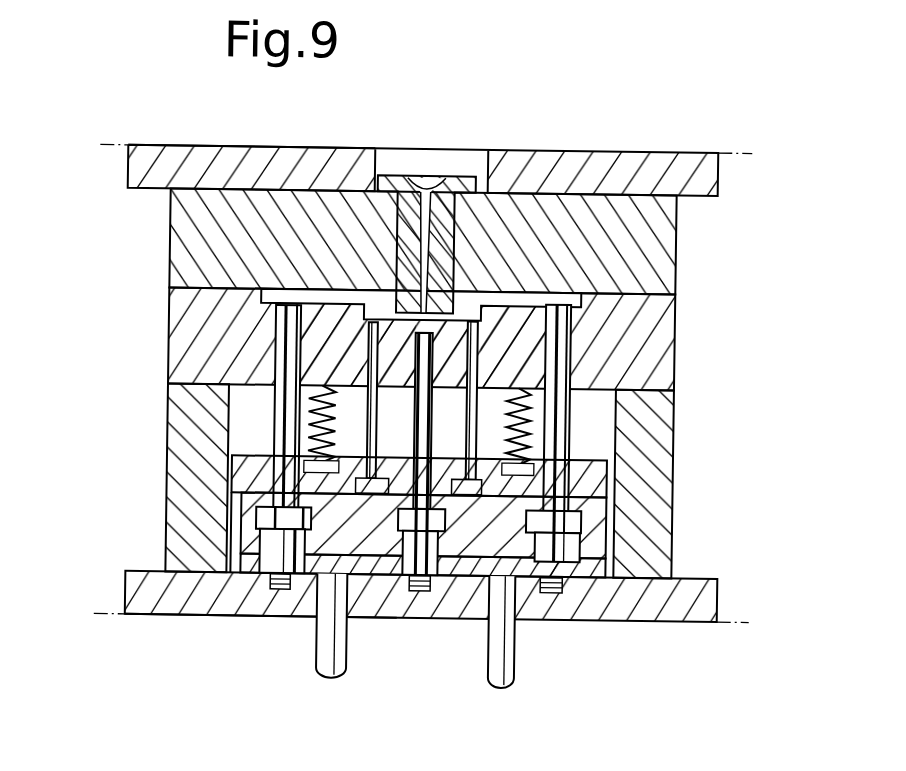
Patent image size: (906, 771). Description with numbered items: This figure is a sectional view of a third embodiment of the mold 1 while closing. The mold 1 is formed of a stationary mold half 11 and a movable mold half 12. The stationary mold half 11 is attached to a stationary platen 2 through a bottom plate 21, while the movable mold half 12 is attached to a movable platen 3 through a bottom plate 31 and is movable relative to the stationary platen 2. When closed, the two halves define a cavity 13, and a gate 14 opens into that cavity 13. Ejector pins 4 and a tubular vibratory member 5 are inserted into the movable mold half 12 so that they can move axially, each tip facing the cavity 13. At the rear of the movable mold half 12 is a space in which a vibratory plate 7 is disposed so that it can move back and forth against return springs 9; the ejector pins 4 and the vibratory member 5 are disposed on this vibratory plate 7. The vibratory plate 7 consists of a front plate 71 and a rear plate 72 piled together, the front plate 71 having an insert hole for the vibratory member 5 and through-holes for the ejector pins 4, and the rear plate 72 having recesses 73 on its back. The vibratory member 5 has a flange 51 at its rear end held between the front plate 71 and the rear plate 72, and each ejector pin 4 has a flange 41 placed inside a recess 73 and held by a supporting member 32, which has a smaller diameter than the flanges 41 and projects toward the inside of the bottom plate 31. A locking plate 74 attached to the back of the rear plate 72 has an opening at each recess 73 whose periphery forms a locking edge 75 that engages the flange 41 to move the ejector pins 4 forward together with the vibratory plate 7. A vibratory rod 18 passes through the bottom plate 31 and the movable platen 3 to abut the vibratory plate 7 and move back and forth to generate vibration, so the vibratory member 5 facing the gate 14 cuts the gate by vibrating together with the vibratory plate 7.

The mold 1 is at (401, 413).
The stationary platen 2 is at (104, 170).
The bottom plate 21 is at (213, 152).
The movable platen 3 is at (110, 607).
The bottom plate 31 is at (178, 604).
The ejector pins 4 is at (360, 336).
The vibratory member 5 is at (290, 343).
The vibratory plate 7 is at (225, 515).
The return springs 9 is at (632, 440).
The stationary mold half 11 is at (212, 244).
The movable mold half 12 is at (178, 376).
The cavity 13 is at (370, 366).
The gate 14 is at (477, 306).
The vibratory rod 18 is at (330, 645).
The supporting member 32 is at (552, 564).
The flanges 41 is at (583, 518).
The flange 51 is at (462, 494).
The front plate 71 is at (260, 473).
The rear plate 72 is at (245, 551).
The recesses 73 is at (582, 545).
The locking plate 74 is at (597, 565).
The locking edge 75 is at (585, 572).